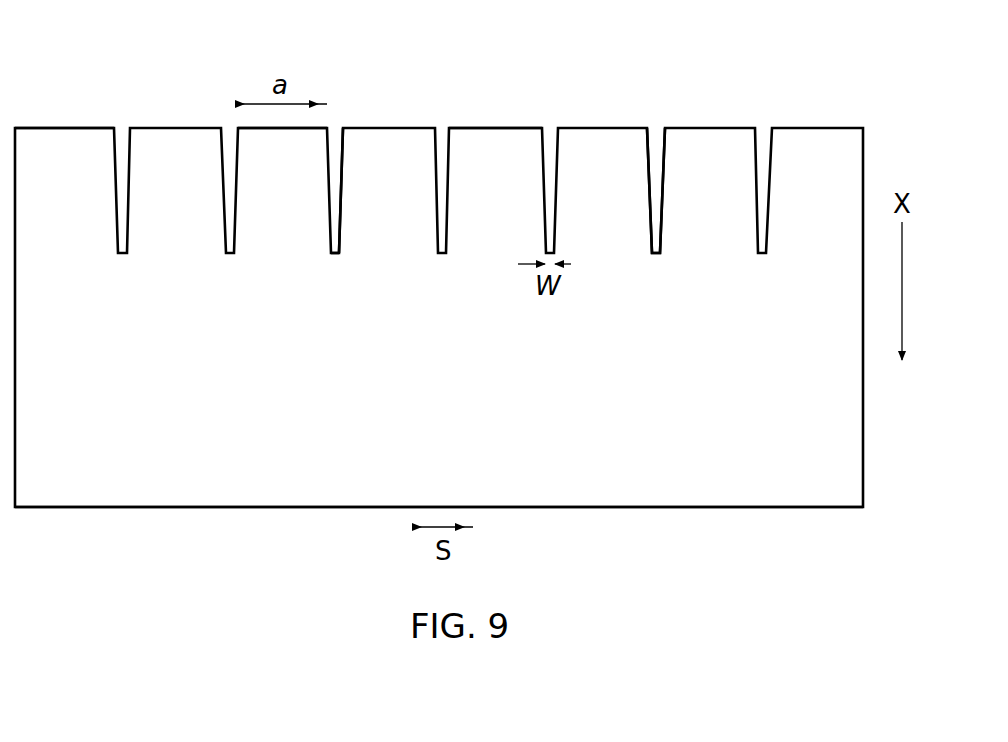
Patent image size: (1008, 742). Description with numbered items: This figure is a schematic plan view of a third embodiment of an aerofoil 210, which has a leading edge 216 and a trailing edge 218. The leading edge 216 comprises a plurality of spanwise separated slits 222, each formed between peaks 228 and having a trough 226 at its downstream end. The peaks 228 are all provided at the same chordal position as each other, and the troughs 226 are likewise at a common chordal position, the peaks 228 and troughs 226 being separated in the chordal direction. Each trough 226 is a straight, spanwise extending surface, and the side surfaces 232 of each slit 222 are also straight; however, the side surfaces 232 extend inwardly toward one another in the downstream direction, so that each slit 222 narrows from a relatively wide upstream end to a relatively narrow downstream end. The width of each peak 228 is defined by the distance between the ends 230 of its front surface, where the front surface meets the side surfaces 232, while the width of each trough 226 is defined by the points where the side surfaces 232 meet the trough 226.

The aerofoil 210 is at (562, 518).
The leading edge 216 is at (102, 105).
The trailing edge 218 is at (215, 509).
The slit 222 is at (656, 148).
The trough 226 is at (331, 255).
The peak 228 is at (480, 127).
The end of the front surface 230 is at (234, 127).
The side surface 232 is at (344, 213).